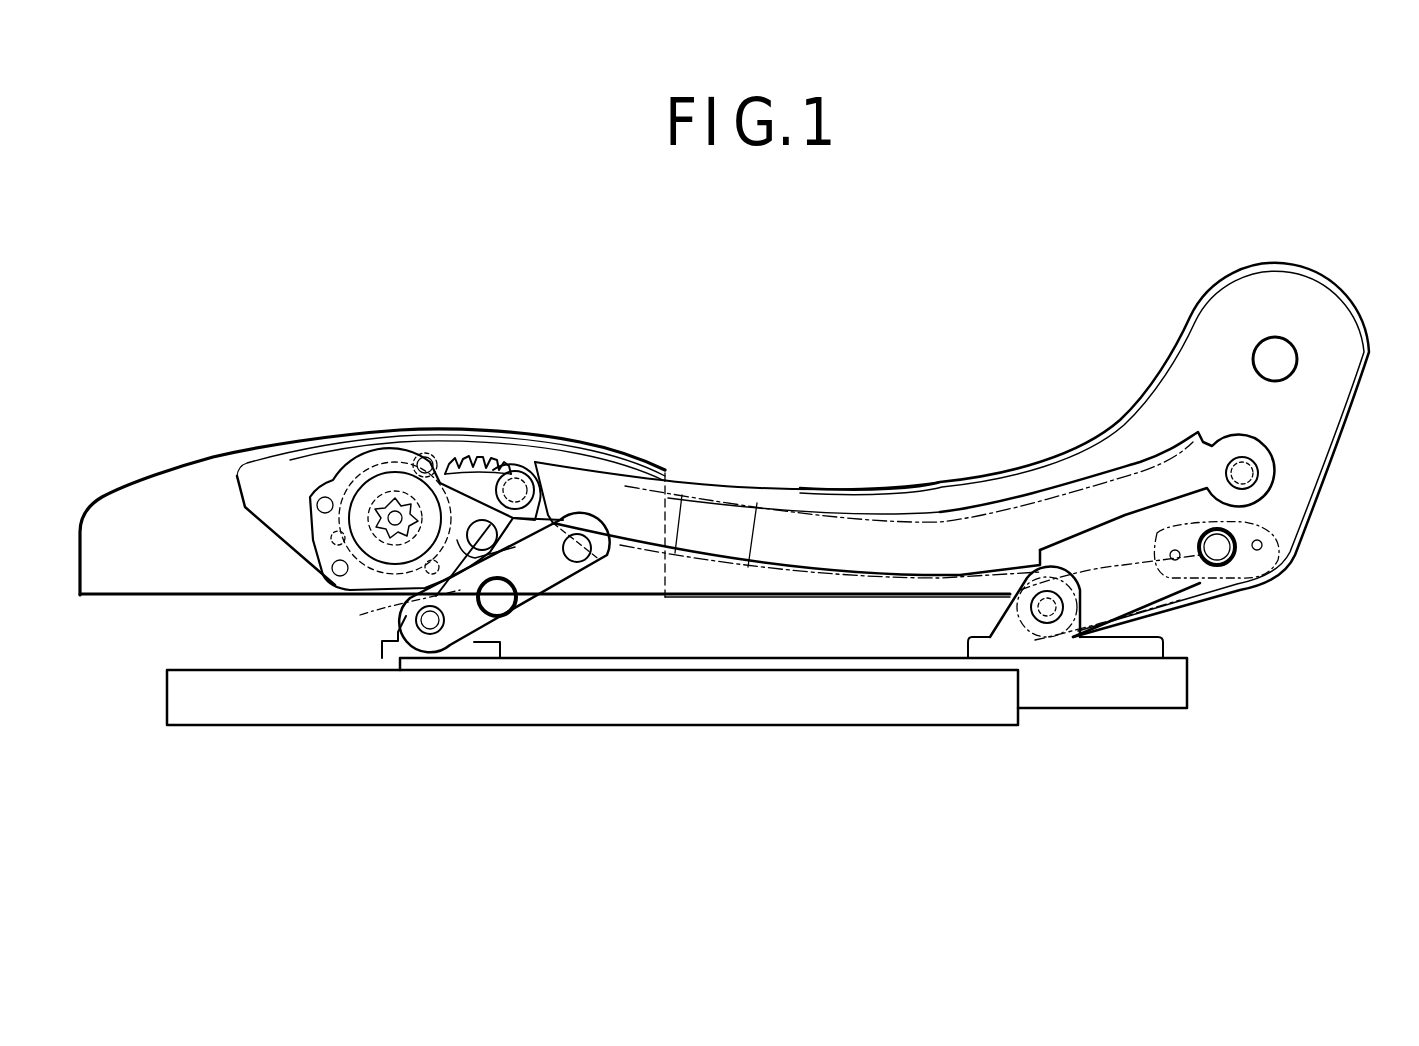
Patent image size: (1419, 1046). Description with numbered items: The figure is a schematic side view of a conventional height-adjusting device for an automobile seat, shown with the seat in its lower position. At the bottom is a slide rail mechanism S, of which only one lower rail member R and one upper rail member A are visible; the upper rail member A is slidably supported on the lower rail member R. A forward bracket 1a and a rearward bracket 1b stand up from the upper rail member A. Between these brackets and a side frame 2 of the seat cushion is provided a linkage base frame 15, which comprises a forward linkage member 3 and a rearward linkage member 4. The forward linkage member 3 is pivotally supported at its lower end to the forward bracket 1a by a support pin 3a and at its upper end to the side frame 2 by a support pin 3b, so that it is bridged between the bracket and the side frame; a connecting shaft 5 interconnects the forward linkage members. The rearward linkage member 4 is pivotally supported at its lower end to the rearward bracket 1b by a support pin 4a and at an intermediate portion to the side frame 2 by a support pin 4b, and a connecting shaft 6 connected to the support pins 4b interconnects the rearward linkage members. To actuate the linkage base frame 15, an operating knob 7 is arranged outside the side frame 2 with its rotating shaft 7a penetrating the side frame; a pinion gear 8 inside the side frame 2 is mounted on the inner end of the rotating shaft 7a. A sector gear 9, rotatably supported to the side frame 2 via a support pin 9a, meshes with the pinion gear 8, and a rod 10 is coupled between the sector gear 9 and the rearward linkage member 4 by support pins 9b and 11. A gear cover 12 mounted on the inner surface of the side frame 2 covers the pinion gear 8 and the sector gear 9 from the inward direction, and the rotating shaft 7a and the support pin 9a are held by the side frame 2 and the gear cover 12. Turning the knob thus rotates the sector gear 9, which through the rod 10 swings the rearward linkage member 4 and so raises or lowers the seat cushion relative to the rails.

The forward bracket 1a is at (390, 624).
The rearward bracket 1b is at (1157, 637).
The side frame 2 is at (214, 455).
The forward linkage member 3 is at (524, 631).
The support pin 3a is at (430, 625).
The support pin 3b is at (600, 555).
The rearward linkage member 4 is at (1134, 620).
The support pin 4a is at (1047, 607).
The support pin 4b is at (1222, 545).
The connecting shaft 5 is at (497, 597).
The connecting shaft 6 is at (1192, 528).
The operating knob 7 is at (384, 448).
The rotating shaft 7a is at (456, 430).
The pinion gear 8 is at (333, 470).
The sector gear 9 is at (492, 450).
The support pin 9a is at (500, 520).
The support pin 9b is at (521, 473).
The rod 10 is at (908, 502).
The support pin 11 is at (1250, 468).
The gear cover 12 is at (304, 507).
The linkage base frame 15 is at (522, 624).
The upper rail member A is at (1172, 688).
The lower rail member R is at (930, 712).
The slide rail mechanism S is at (770, 732).